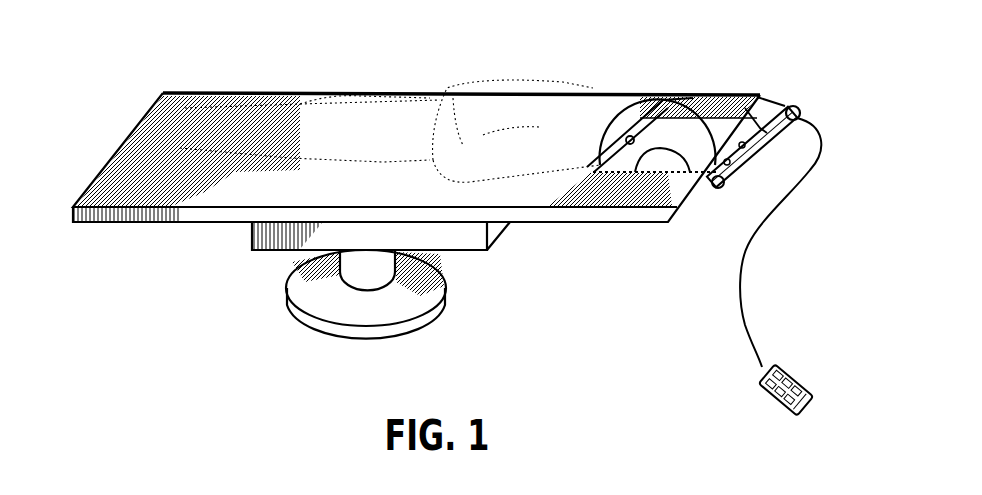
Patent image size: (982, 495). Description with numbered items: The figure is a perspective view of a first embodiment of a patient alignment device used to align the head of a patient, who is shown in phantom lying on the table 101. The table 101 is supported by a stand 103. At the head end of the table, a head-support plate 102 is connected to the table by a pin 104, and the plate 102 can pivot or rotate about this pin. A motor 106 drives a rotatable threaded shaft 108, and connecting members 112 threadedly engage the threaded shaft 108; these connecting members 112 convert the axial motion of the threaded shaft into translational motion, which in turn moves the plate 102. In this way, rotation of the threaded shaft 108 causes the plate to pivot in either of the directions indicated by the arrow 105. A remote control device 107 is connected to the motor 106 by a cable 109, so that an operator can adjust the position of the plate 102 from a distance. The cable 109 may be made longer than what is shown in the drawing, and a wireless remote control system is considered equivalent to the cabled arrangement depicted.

The table 101 is at (243, 192).
The head-support plate 102 is at (672, 190).
The stand 103 is at (373, 307).
The pin 104 is at (630, 138).
The arrow 105 is at (645, 200).
The motor 106 is at (793, 106).
The remote control device 107 is at (765, 406).
The threaded shaft 108 is at (760, 128).
The cable 109 is at (743, 308).
The connecting members 112 is at (747, 120).